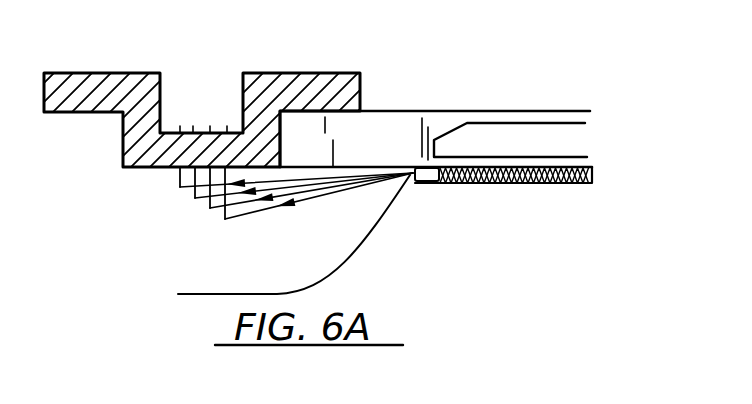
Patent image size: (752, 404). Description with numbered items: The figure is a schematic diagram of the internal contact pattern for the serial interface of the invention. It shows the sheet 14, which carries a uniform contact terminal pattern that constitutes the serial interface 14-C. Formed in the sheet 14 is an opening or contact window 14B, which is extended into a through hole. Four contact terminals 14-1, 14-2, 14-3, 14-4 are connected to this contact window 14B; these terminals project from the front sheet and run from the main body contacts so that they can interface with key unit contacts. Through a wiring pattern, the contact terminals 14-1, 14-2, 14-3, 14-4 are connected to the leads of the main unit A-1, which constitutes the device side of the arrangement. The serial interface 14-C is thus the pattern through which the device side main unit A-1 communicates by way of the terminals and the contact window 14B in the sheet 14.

The sheet 14 is at (400, 111).
The opening 14B is at (165, 132).
The contact terminal 14-1 is at (180, 187).
The contact terminal 14-2 is at (195, 198).
The contact terminal 14-3 is at (210, 208).
The contact terminal 14-4 is at (227, 219).
The serial interface 14-C is at (375, 233).
The main unit A-1 is at (553, 155).